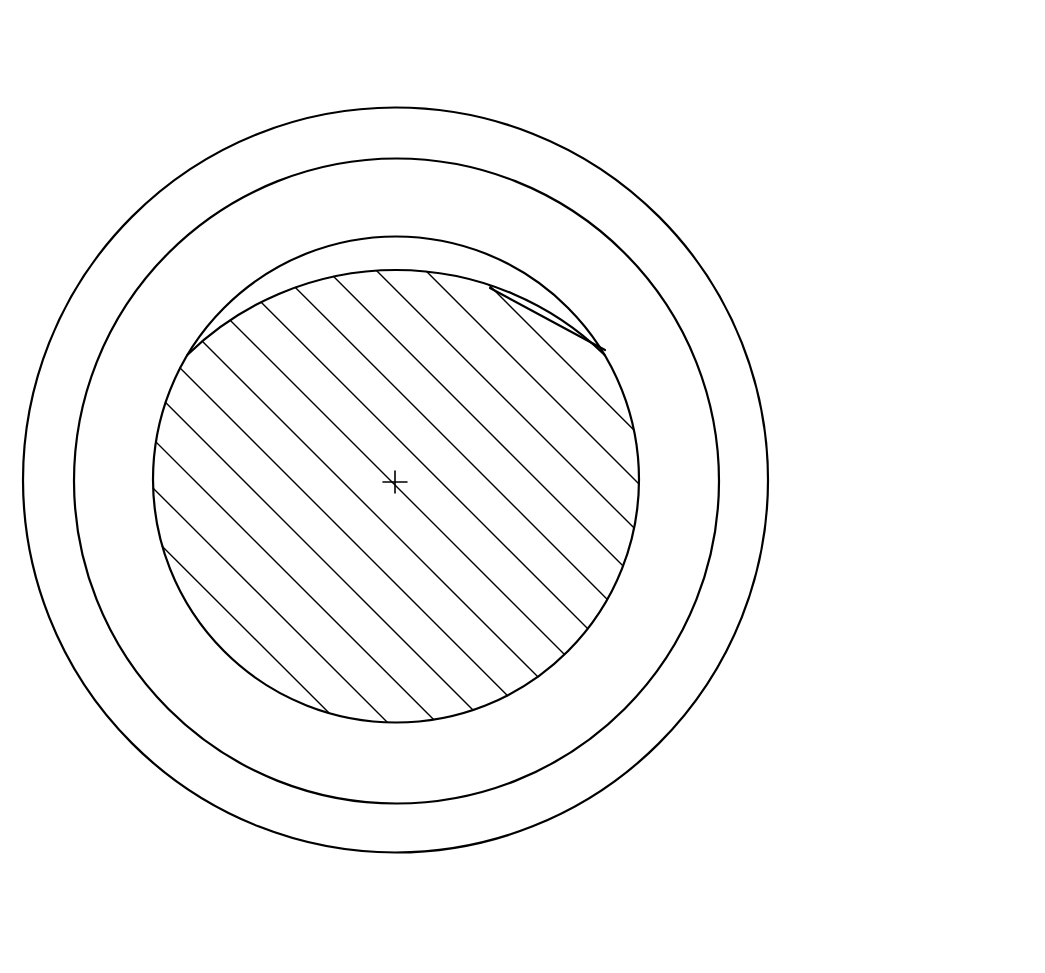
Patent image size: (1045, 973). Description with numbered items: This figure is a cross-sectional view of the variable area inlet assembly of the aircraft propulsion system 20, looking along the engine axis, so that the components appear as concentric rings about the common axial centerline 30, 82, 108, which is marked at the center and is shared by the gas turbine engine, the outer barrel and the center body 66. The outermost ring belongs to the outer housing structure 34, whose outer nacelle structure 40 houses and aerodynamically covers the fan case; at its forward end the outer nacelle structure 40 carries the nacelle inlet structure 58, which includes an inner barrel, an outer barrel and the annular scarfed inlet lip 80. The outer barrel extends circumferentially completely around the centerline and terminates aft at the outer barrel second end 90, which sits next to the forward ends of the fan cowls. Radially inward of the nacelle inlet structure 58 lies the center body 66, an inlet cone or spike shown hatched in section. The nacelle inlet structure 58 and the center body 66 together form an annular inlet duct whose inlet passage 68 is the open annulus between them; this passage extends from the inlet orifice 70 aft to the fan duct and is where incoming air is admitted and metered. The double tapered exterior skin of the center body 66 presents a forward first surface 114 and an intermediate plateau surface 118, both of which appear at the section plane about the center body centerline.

The aircraft propulsion system 20 is at (658, 72).
The outer housing structure 34 is at (653, 175).
The outer nacelle structure 40 is at (662, 209).
The nacelle inlet structure 58 is at (698, 248).
The scarfed inlet lip 80 is at (755, 358).
The inlet orifice 70 is at (508, 200).
The inlet passage 68 is at (664, 506).
The outer barrel second end 90 is at (748, 473).
The first surface 114 is at (350, 258).
The plateau surface 118 is at (231, 304).
The center body 66 is at (610, 348).
The axial centerline 30 is at (397, 483).
The axial centerline 82 is at (396, 497).
The axial centerline of the center body 108 is at (396, 497).